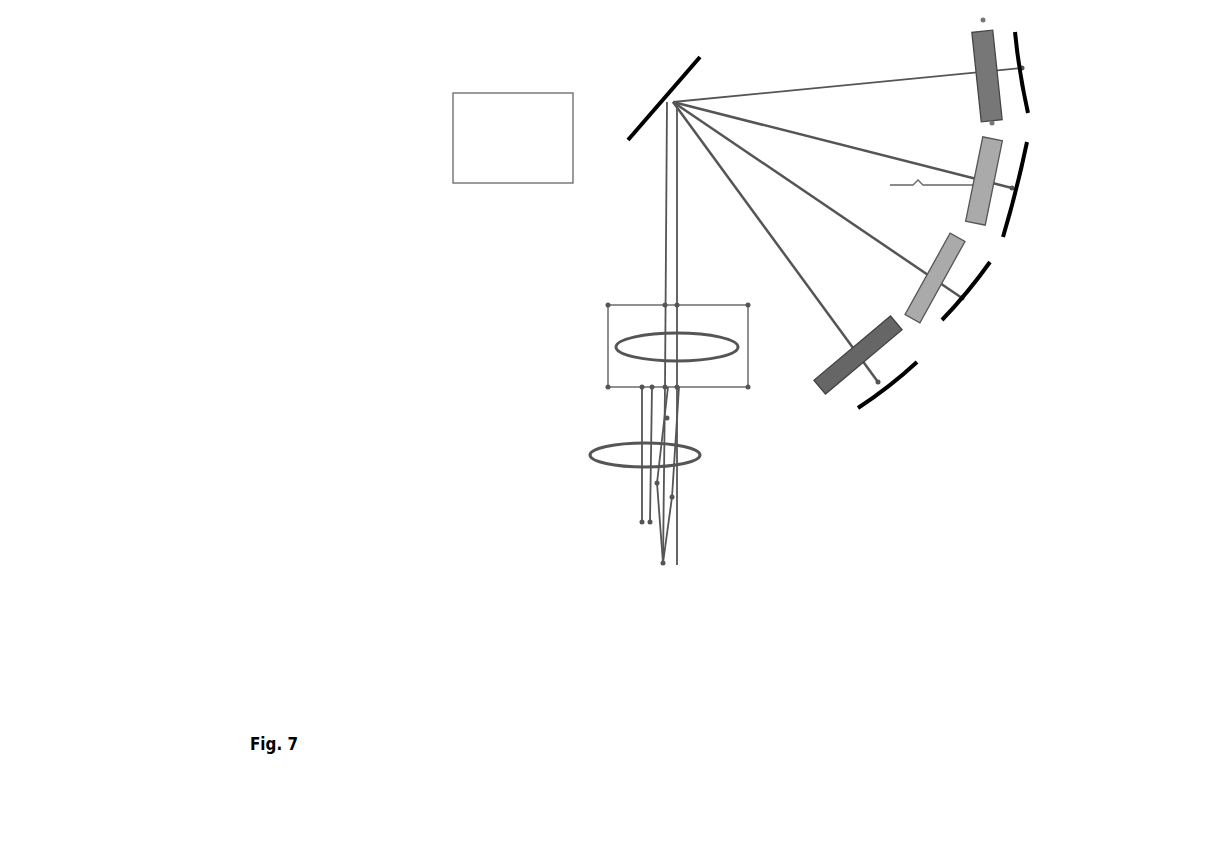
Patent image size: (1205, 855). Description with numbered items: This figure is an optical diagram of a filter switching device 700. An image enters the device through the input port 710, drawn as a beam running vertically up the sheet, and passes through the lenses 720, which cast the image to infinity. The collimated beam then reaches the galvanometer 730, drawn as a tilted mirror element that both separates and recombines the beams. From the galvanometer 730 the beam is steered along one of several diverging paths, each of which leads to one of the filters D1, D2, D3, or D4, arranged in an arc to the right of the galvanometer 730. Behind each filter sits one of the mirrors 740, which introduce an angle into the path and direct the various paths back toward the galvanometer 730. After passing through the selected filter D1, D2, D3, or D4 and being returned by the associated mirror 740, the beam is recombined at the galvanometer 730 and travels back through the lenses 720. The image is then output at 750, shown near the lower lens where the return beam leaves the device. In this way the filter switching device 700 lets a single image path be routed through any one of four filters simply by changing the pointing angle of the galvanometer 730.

The filter switching device 700 is at (822, 103).
The input port 710 is at (823, 375).
The lenses 720 is at (656, 385).
The galvanometer 730 is at (653, 98).
The mirrors 740 is at (945, 222).
The output 750 is at (590, 458).
The filter D1 is at (967, 72).
The filter D2 is at (967, 181).
The filter D3 is at (930, 273).
The filter D4 is at (858, 344).